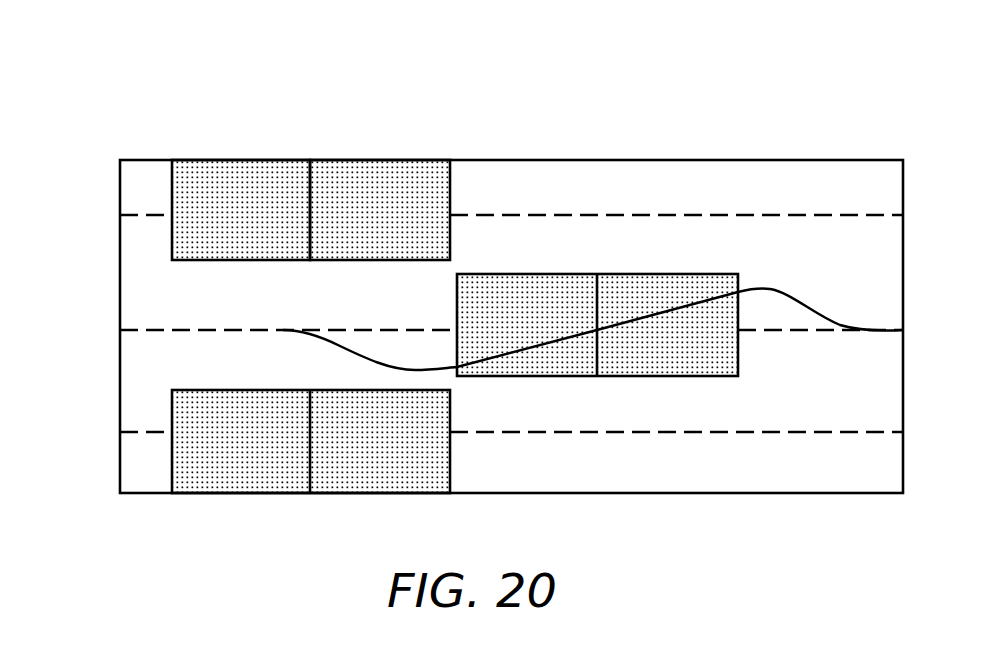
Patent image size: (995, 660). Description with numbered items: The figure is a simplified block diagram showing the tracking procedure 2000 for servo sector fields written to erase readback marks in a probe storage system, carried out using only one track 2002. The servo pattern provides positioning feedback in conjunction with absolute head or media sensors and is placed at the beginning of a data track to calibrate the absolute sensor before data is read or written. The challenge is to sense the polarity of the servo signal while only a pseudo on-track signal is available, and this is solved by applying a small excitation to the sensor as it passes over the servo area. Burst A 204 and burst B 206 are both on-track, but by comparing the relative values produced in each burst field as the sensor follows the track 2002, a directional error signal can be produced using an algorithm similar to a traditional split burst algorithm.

The tracking procedure 2000 is at (597, 147).
The burst A 204 is at (240, 160).
The burst B 206 is at (408, 160).
The track 2002 is at (808, 302).